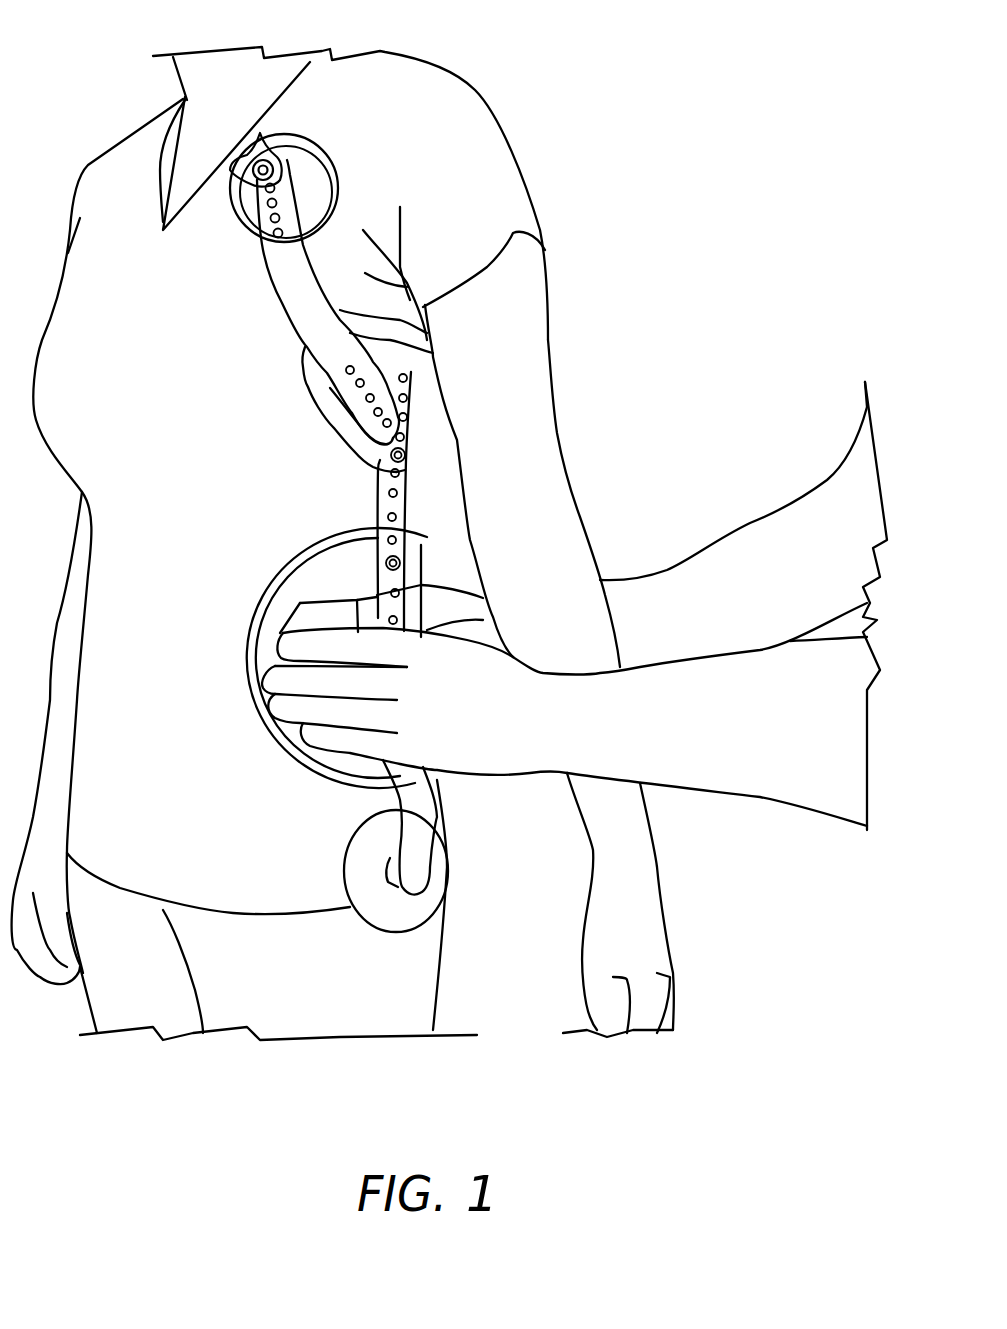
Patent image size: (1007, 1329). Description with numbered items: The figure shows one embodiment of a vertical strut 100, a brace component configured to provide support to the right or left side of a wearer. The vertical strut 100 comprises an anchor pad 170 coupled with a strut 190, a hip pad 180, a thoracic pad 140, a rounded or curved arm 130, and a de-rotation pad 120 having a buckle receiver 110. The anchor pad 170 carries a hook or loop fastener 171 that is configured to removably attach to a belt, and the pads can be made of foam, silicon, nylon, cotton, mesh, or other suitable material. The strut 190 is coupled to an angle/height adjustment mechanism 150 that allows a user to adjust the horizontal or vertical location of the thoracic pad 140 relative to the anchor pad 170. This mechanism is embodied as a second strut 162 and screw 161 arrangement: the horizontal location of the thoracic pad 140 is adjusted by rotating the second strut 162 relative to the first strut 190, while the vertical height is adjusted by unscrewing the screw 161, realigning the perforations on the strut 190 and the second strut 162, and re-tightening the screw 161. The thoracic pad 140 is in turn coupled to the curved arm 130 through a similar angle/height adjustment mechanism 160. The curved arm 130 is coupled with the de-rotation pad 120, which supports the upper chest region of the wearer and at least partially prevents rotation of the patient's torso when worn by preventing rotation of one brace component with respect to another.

The vertical strut 100 is at (606, 82).
The buckle receiver 110 is at (237, 145).
The de-rotation pad 120 is at (307, 140).
The curved arm 130 is at (273, 280).
The thoracic pad 140 is at (305, 366).
The angle/height adjustment mechanism 150 is at (377, 503).
The angle/height adjustment mechanism 160 is at (350, 403).
The screw 161 is at (400, 560).
The second strut 162 is at (400, 490).
The anchor pad 170 is at (293, 600).
The hook or loop fastener 171 is at (310, 617).
The hip pad 180 is at (343, 860).
The strut 190 is at (400, 607).